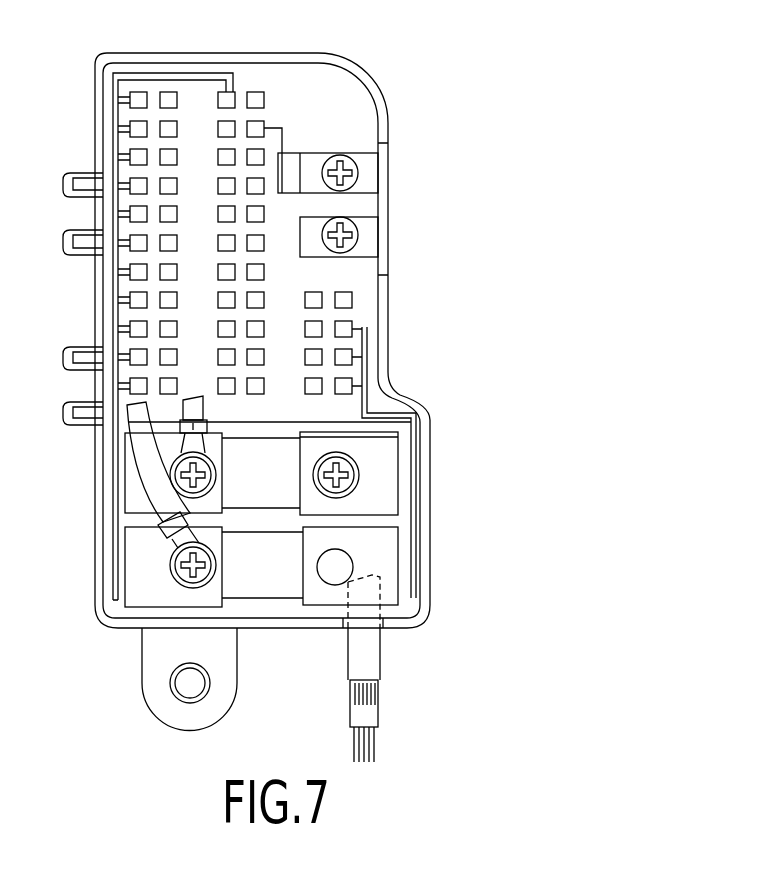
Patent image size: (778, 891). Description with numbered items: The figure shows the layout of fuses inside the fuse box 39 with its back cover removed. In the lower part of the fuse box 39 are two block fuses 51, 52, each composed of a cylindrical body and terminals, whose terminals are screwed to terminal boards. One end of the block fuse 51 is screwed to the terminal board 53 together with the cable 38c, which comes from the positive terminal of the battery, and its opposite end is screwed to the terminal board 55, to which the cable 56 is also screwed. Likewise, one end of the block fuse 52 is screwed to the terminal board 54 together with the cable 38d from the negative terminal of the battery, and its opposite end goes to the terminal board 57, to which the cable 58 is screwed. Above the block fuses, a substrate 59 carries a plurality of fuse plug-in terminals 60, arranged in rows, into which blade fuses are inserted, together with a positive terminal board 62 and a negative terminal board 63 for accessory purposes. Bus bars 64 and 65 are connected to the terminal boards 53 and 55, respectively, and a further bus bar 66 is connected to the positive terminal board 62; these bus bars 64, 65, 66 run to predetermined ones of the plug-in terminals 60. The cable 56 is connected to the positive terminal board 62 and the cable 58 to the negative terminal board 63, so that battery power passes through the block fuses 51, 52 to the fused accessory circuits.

The fuse box 39 is at (383, 61).
The bus bar 65 is at (175, 73).
The bus bar 66 is at (285, 130).
The positive terminal board for accessory 62 is at (362, 163).
The negative terminal board for accessory 63 is at (362, 230).
The fuse plug-in terminals 60 is at (268, 294).
The substrate 59 is at (366, 303).
The bus bar 64 is at (367, 393).
The cable 56 is at (195, 400).
The block fuse 51 is at (282, 458).
The block fuse 52 is at (263, 588).
The terminal board 53 is at (385, 472).
The terminal board 54 is at (390, 583).
The terminal board 55 is at (135, 495).
The terminal board 57 is at (137, 592).
The cable 58 is at (143, 456).
The cable 38d is at (367, 655).
The cable 38c is at (370, 713).